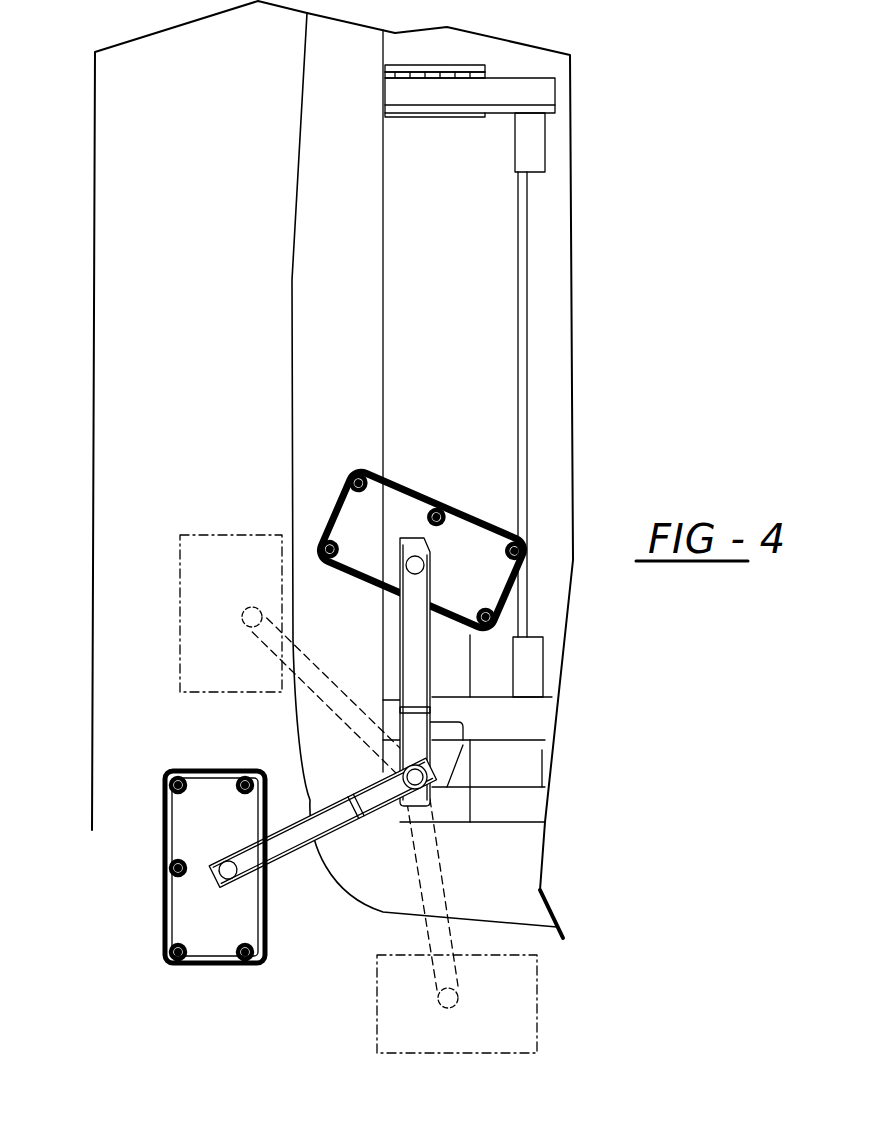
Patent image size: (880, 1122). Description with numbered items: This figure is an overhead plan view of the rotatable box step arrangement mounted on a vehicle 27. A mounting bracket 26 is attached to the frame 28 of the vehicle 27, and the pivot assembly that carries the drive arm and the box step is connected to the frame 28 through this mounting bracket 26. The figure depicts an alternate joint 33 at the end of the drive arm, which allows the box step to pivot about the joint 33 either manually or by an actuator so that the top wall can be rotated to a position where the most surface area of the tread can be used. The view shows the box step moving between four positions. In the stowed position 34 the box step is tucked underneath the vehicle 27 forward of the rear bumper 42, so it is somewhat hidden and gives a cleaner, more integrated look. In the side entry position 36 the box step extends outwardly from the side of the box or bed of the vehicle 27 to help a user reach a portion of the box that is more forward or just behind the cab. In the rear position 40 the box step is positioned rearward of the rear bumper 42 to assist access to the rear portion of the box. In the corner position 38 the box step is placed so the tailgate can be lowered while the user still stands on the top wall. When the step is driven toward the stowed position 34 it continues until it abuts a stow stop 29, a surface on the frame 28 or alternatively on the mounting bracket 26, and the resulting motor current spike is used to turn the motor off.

The rear bumper 42 is at (327, 235).
The vehicle 27 is at (555, 287).
The stowed position 34 is at (413, 482).
The rear position 40 is at (180, 605).
The stow stop 29 is at (432, 682).
The frame 28 is at (530, 718).
The mounting bracket 26 is at (545, 787).
The joint 33 is at (215, 860).
The corner position 38 is at (162, 908).
The side entry position 36 is at (377, 1006).